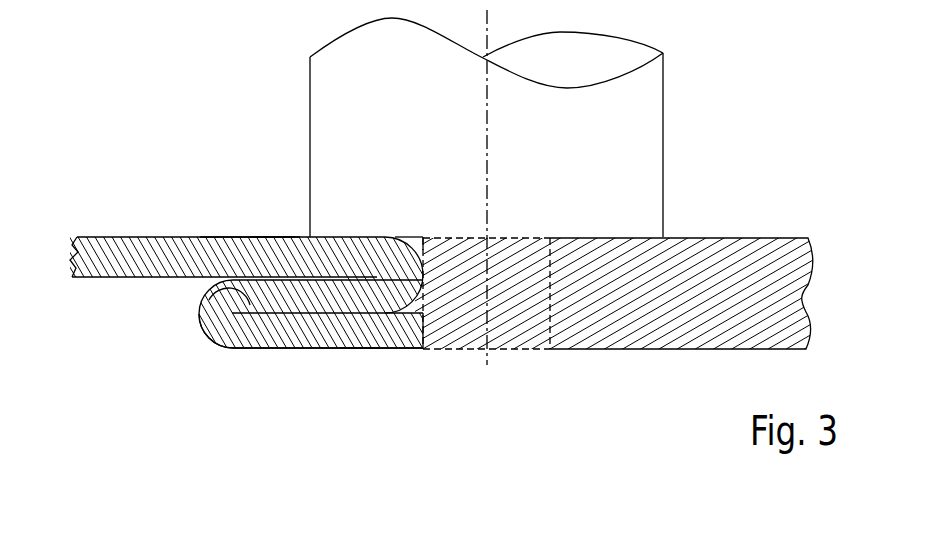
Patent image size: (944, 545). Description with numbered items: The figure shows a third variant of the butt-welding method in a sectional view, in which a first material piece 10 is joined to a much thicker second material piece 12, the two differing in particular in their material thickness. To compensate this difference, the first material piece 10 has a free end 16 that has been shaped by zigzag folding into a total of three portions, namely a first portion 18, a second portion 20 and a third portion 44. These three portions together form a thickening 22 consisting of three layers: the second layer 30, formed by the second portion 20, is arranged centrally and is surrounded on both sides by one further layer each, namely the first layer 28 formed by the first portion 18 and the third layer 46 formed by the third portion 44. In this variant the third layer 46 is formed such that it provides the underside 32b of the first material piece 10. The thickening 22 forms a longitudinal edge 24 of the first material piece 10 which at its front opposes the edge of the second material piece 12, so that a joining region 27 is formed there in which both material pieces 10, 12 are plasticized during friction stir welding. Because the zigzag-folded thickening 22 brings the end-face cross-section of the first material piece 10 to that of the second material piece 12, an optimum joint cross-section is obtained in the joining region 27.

The first material piece 10 is at (104, 237).
The second material piece 12 is at (623, 338).
The free end 16 is at (272, 215).
The first portion 18 is at (239, 237).
The second portion 20 is at (216, 283).
The thickening 22 is at (358, 405).
The longitudinal edge 24 is at (407, 237).
The joining region 27 is at (423, 237).
The first layer 28 is at (355, 237).
The second layer 30 is at (210, 345).
The underside 32b is at (243, 351).
The third portion 44 is at (323, 349).
The third layer 46 is at (405, 349).